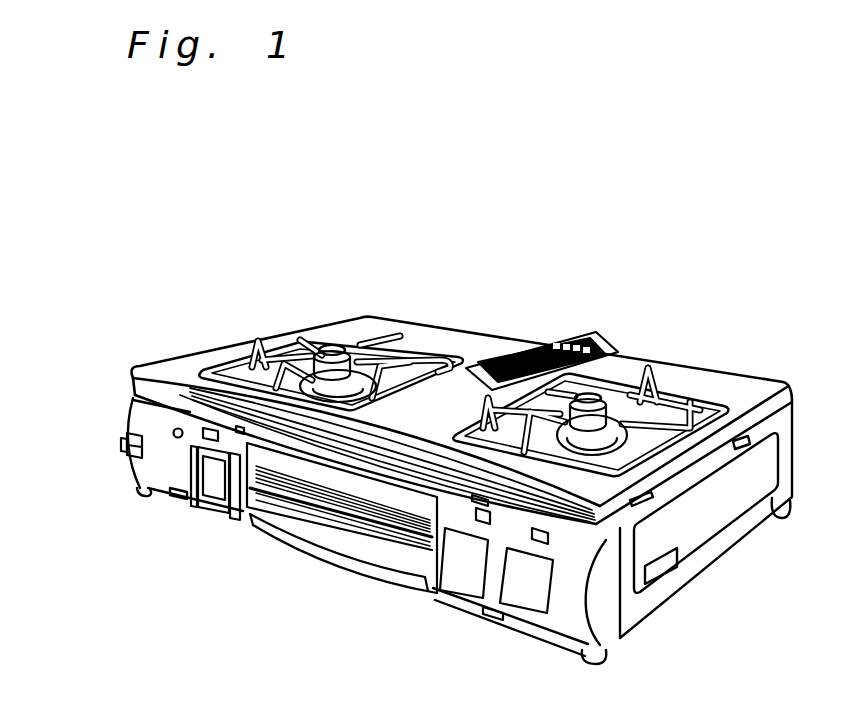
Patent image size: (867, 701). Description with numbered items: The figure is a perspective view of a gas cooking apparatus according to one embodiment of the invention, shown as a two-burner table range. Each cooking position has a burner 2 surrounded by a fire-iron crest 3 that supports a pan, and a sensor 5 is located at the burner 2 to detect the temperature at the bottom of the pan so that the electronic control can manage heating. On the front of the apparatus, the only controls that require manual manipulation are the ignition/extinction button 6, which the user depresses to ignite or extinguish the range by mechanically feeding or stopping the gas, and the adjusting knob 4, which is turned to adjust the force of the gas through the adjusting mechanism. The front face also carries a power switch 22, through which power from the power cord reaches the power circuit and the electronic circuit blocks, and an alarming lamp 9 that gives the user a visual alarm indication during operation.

The burner 2 is at (300, 335).
The fire-iron crest 3 is at (387, 333).
The adjusting knob 4 is at (198, 447).
The sensor 5 is at (331, 347).
The ignition/extinction button 6 is at (217, 485).
The alarming lamp 9 is at (176, 437).
The power switch 22 is at (127, 437).